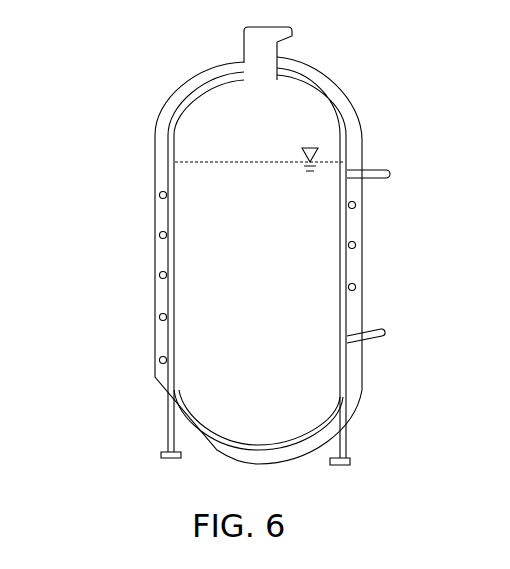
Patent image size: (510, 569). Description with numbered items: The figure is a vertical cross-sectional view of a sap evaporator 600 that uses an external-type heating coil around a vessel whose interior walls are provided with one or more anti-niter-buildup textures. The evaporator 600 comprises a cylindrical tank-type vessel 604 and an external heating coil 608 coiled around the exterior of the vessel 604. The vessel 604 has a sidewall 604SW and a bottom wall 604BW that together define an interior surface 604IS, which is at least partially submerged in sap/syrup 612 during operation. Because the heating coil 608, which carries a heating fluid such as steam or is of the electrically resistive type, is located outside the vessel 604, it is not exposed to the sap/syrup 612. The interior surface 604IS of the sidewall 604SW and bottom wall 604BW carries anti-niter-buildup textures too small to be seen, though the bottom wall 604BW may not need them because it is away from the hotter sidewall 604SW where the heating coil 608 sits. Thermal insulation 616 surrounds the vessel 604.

The evaporator 600 is at (374, 71).
The tank-type vessel 604 is at (210, 89).
The interior surface 604IS is at (177, 182).
The sidewall 604SW is at (347, 228).
The bottom wall 604BW is at (224, 444).
The external heating coil 608 is at (163, 232).
The sap/syrup 612 is at (245, 162).
The thermal insulation 616 is at (364, 136).